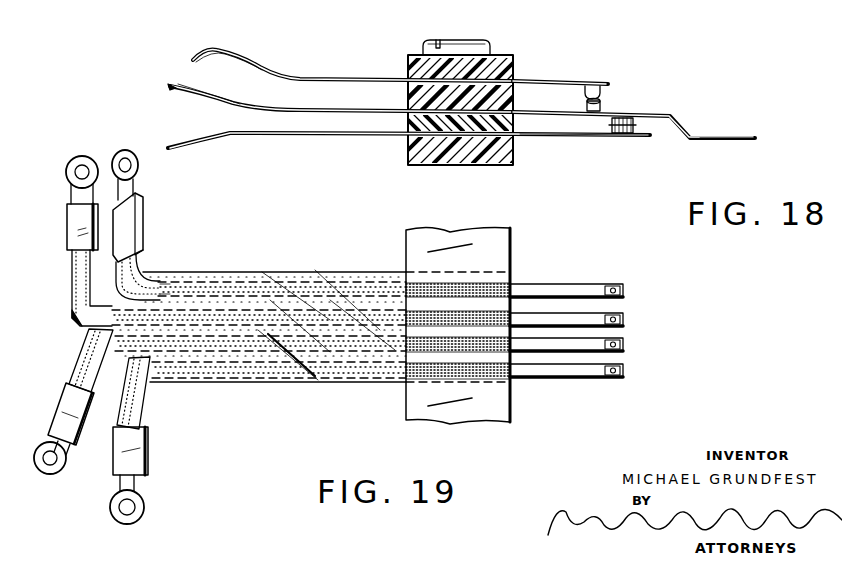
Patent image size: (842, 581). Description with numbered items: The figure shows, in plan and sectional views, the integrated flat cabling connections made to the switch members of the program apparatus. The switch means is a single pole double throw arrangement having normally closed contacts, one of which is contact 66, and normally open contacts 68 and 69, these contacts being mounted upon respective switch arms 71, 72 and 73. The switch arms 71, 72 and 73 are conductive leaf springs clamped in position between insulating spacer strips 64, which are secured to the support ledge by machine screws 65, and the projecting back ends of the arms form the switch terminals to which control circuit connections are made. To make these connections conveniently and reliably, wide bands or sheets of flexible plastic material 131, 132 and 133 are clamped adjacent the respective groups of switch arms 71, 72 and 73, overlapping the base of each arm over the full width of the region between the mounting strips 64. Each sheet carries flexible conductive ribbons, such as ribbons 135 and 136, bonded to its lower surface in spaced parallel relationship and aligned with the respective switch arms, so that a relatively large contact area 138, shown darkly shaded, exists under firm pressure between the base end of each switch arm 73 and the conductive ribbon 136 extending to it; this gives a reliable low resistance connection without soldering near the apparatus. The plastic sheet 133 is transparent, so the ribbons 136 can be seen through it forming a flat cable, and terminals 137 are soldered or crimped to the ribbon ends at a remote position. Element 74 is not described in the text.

In FIG. 18, the insulating spacer strips 64 is at (408, 72).
In FIG. 19, the insulating spacer strips 64 is at (497, 245).
In FIG. 18, the machine screws 65 is at (470, 30).
In FIG. 18, the normally closed contact 66 is at (622, 134).
In FIG. 18, the normally open contact 68 is at (601, 106).
In FIG. 18, the normally open contact 69 is at (601, 92).
In FIG. 19, the normally open contact 69 is at (604, 286).
In FIG. 18, the switch arm 71 is at (580, 138).
In FIG. 18, the switch arm 72 is at (556, 96).
In FIG. 18, the switch arm 73 is at (556, 82).
In FIG. 19, the switch arm 73 is at (562, 315).
In FIG. 18, the strip end 74 is at (724, 138).
In FIG. 18, the flexible plastic sheet 131 is at (224, 136).
In FIG. 18, the flexible plastic sheet 132 is at (170, 87).
In FIG. 18, the flexible plastic sheet 133 is at (200, 60).
In FIG. 19, the flexible plastic sheet 133 is at (214, 272).
In FIG. 18, the conductive ribbon 135 is at (240, 132).
In FIG. 18, the conductive ribbon 136 is at (240, 62).
In FIG. 19, the conductive ribbon 136 is at (180, 300).
In FIG. 19, the terminal 137 is at (143, 207).
In FIG. 19, the contact area 138 is at (500, 288).